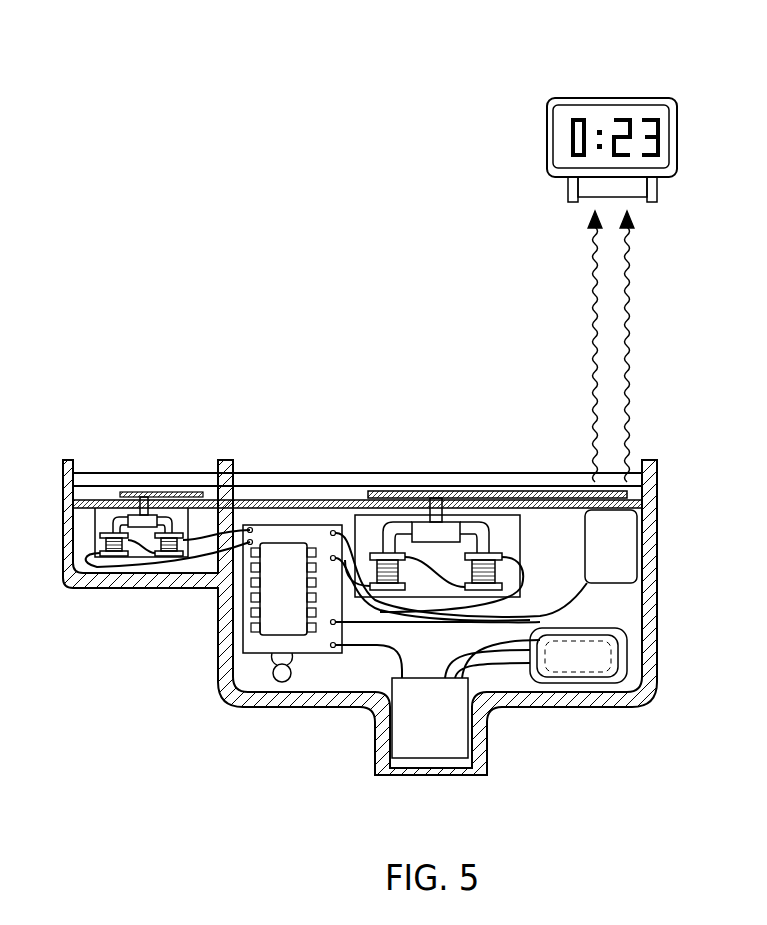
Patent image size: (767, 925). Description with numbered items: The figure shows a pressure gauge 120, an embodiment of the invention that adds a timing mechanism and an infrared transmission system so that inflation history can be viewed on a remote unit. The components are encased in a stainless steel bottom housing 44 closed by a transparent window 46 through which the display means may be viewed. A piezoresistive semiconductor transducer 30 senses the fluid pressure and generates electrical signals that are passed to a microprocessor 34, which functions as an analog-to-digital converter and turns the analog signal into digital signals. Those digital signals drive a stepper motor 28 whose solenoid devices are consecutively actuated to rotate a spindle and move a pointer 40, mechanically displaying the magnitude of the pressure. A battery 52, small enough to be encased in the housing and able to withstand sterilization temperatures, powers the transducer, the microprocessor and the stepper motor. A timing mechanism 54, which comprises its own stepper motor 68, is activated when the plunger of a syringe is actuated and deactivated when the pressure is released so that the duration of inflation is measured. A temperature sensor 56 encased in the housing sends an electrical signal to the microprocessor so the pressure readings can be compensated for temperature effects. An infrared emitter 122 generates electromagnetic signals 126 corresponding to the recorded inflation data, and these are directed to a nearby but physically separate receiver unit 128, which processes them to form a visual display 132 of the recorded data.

The stepper motor 28 is at (372, 525).
The piezoresistive semiconductor transducer 30 is at (418, 728).
The microprocessor 34 is at (277, 607).
The pointer 40 is at (502, 491).
The bottom housing 44 is at (650, 545).
The transparent window 46 is at (293, 472).
The battery 52 is at (590, 665).
The timing mechanism 54 is at (148, 435).
The temperature sensor 56 is at (282, 674).
The stepper motor 68 is at (138, 552).
The pressure gauge 120 is at (293, 316).
The infrared emitter 122 is at (627, 532).
The electromagnetic signals 126 is at (592, 335).
The receiver unit 128 is at (585, 183).
The visual display 132 is at (595, 118).